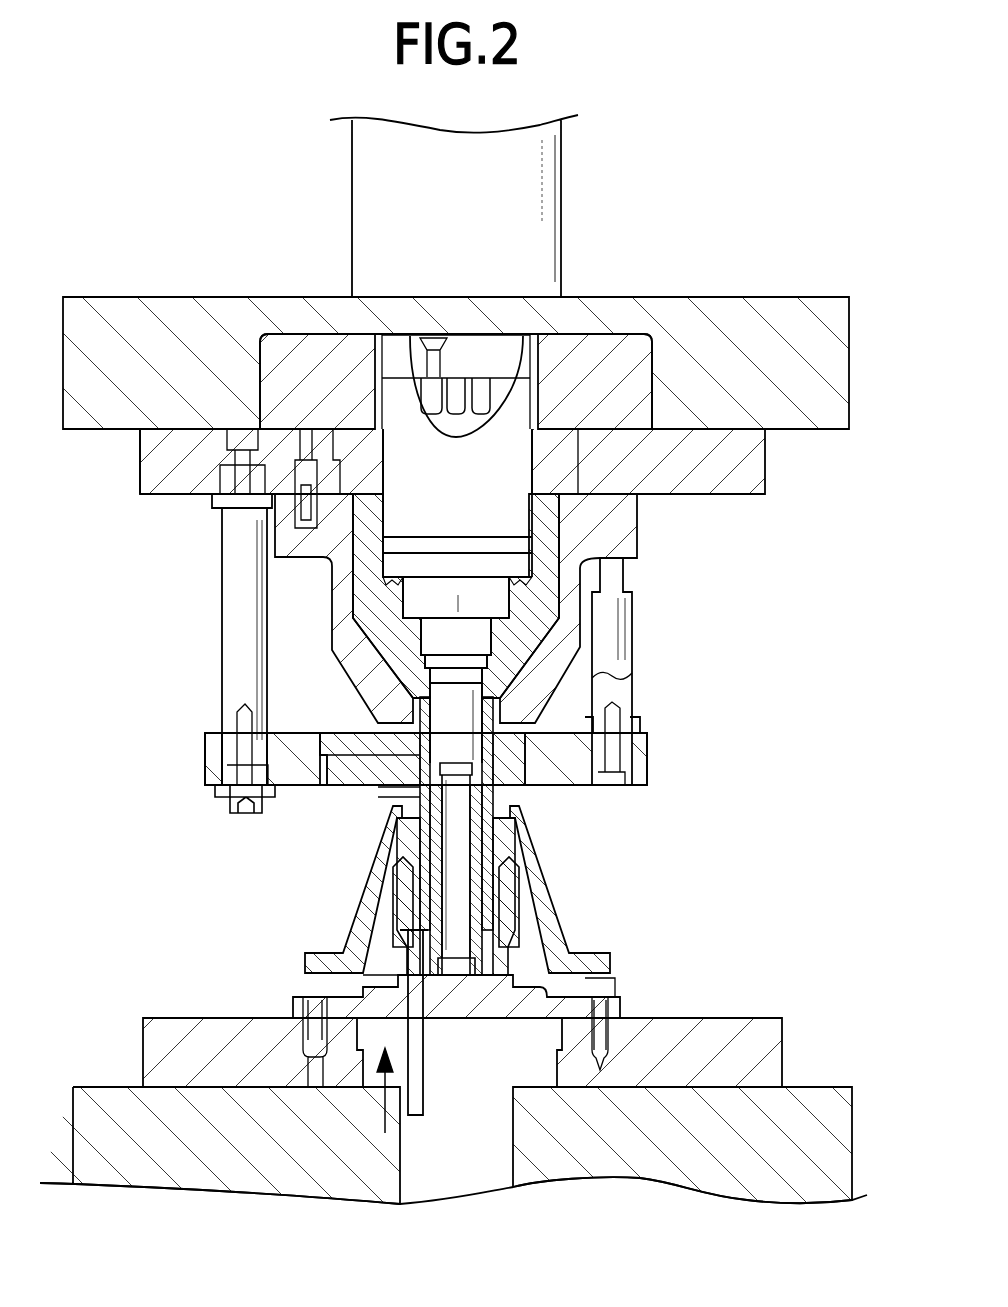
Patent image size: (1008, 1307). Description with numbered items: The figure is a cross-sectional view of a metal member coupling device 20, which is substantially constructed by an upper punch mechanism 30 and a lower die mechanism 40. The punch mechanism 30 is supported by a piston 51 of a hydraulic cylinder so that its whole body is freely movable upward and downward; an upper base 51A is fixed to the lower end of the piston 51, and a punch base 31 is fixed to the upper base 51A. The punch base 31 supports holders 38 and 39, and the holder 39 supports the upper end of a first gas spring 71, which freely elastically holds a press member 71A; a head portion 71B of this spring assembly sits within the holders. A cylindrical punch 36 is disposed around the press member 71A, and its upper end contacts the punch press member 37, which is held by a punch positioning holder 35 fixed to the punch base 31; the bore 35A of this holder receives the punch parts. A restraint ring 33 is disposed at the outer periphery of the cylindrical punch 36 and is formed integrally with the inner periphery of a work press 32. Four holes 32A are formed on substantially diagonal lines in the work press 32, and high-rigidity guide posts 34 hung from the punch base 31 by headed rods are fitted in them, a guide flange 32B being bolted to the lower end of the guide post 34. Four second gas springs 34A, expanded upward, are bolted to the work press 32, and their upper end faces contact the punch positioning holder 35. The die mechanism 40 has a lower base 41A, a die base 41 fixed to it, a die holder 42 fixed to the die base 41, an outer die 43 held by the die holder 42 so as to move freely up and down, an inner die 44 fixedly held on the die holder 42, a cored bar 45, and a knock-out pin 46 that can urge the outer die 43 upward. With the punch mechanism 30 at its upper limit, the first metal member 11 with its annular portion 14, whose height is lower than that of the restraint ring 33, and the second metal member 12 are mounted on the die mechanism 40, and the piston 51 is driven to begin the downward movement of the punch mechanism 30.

The piston 51 is at (530, 178).
The upper base 51A is at (736, 312).
The first gas spring 71 is at (404, 387).
The press member 71A is at (470, 745).
The punch head 71B is at (503, 343).
The punch base 31 is at (190, 447).
The holder 38 is at (358, 460).
The holder 39 is at (333, 357).
The punch press member 37 is at (362, 538).
The punch positioning holder 35 is at (342, 605).
The upper die bore 35A is at (422, 682).
The guide post 34 is at (227, 615).
The second gas spring 34A is at (620, 667).
The restraint ring 33 is at (320, 728).
The cylindrical punch 36 is at (398, 750).
The work press 32 is at (235, 760).
The hole 32A is at (222, 736).
The guide flange 32B is at (228, 797).
The second metal member 12 is at (420, 787).
The annular portion 14 is at (420, 797).
The outer die 43 is at (420, 852).
The cored bar 45 is at (363, 905).
The first metal member 11 is at (372, 920).
The inner die 44 is at (500, 985).
The die holder 42 is at (397, 943).
The knock-out pin 46 is at (413, 1107).
The die base 41 is at (192, 1050).
The lower base 41A is at (108, 1155).
The punch mechanism 30 is at (652, 583).
The die mechanism 40 is at (617, 908).
The metal member coupling device 20 is at (818, 535).